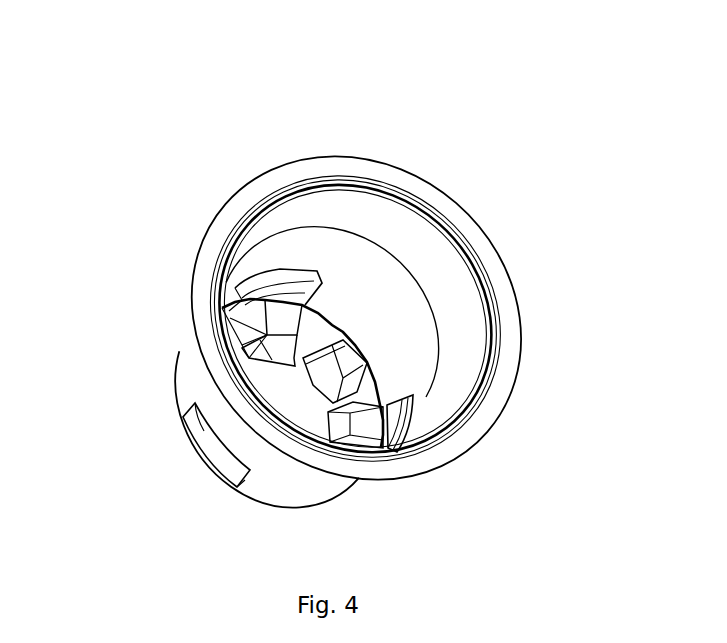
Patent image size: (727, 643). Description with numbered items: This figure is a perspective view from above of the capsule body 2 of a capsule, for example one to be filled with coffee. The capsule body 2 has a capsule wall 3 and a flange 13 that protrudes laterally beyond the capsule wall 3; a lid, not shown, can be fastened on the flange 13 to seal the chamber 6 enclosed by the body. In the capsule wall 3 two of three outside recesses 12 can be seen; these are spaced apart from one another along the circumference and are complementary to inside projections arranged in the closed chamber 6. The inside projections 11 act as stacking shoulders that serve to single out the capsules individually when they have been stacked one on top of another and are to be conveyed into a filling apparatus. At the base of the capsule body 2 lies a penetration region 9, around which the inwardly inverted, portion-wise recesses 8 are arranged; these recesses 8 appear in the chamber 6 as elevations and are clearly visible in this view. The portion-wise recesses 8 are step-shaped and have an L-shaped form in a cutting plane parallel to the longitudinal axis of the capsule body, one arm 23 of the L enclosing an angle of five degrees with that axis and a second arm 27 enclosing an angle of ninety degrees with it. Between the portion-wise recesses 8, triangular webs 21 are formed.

The capsule body 2 is at (372, 94).
The capsule wall 3 is at (195, 370).
The chamber 6 is at (410, 303).
The portion-wise recesses 8 is at (370, 368).
The penetration region 9 is at (283, 403).
The inside projections 11 is at (262, 285).
The outside recesses 12 is at (210, 455).
The flange 13 is at (230, 218).
The triangular webs 21 is at (360, 397).
The arm 23 is at (279, 348).
The second arm 27 is at (285, 321).